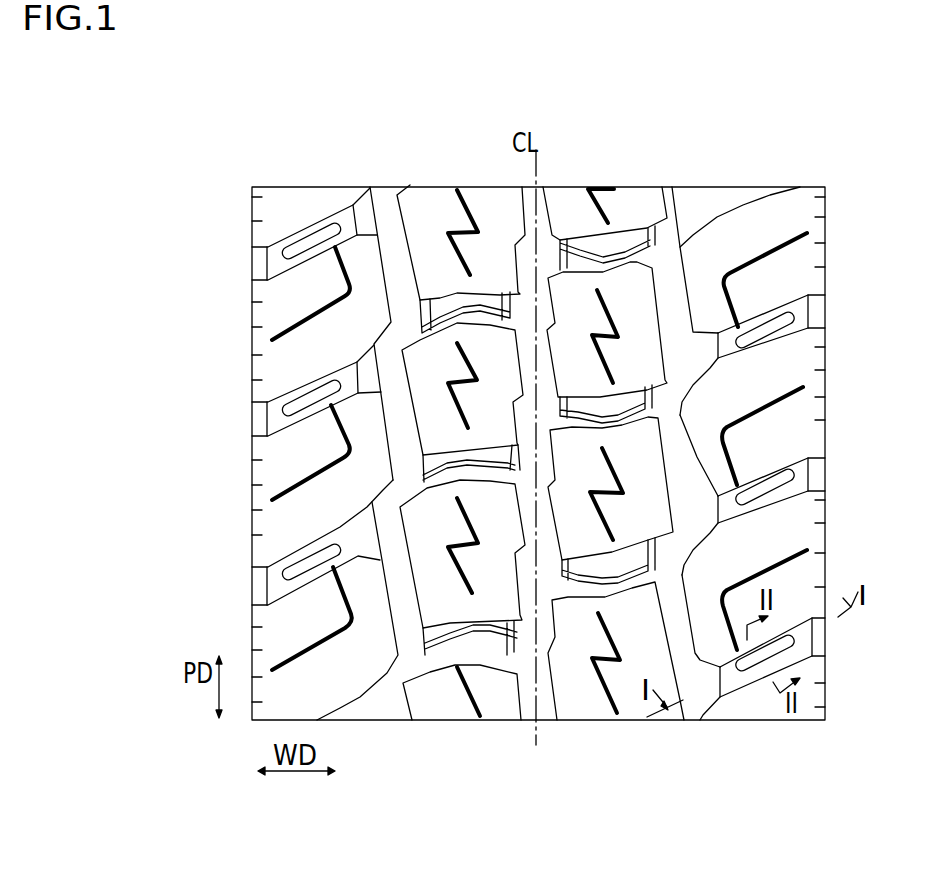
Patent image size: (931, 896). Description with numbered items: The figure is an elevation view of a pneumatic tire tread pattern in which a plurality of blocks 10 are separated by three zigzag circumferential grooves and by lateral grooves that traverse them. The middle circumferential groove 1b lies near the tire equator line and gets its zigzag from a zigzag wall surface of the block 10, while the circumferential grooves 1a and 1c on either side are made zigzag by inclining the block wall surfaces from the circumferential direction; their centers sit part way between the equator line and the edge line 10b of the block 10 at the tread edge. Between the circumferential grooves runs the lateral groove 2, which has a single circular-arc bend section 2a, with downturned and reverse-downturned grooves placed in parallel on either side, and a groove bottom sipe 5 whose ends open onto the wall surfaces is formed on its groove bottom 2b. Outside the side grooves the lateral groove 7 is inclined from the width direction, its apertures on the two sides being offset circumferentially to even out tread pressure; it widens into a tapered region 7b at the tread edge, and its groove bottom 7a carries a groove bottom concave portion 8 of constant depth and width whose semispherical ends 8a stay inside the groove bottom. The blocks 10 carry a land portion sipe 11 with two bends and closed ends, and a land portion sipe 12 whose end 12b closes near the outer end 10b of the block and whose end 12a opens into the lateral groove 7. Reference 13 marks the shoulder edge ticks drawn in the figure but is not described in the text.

The circumferential groove on one side 1a is at (388, 723).
The circumferential groove in the middle 1b is at (548, 722).
The circumferential groove on the other side 1c is at (683, 720).
The lateral groove 2 is at (408, 337).
The bend section 2a is at (470, 457).
The groove bottom of the lateral groove 2b is at (490, 655).
The groove bottom sipe 5 is at (443, 460).
The lateral groove 7 is at (272, 414).
The groove bottom of the lateral groove 7a is at (274, 404).
The tapered region 7b is at (266, 606).
The groove bottom concave portion 8 is at (304, 412).
The ends of the groove bottom concave portion 8a is at (798, 313).
The block 10 is at (320, 283).
The edge line of the block 10b is at (252, 525).
The land portion sipe 11 is at (468, 579).
The land portion sipe 12 is at (288, 327).
The other end of the land portion sipe 12a is at (731, 322).
The one end of the land portion sipe 12b is at (790, 233).
The shoulder edge 13 is at (253, 377).